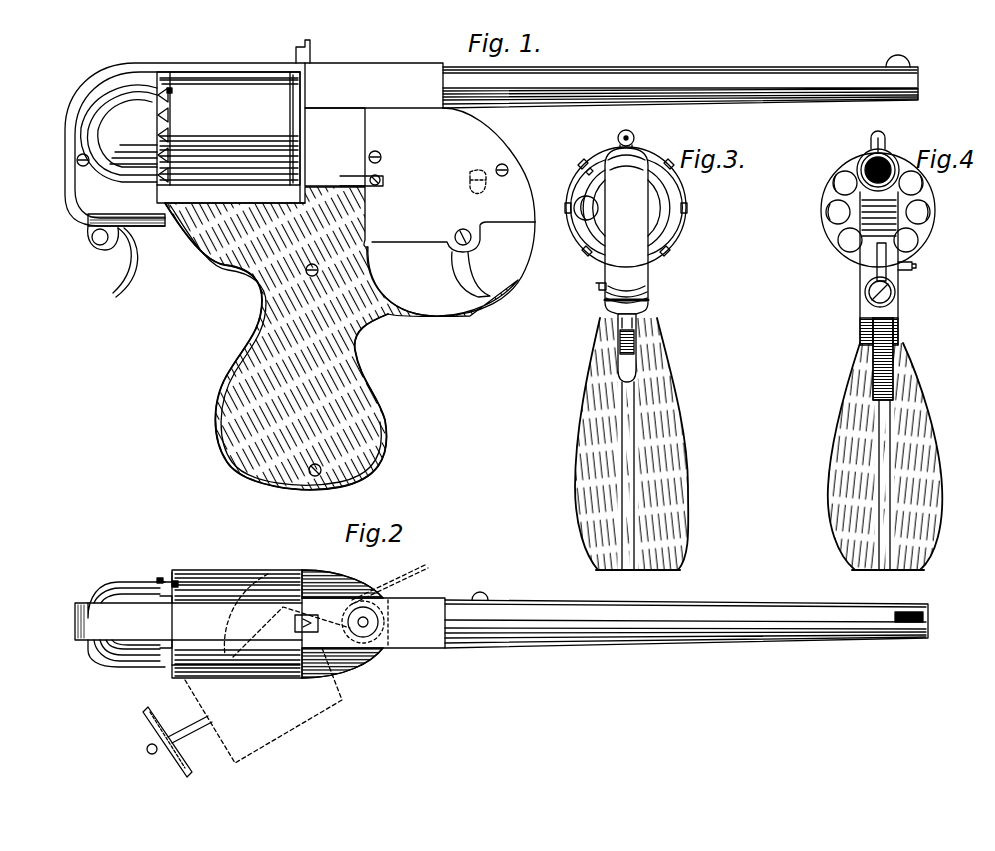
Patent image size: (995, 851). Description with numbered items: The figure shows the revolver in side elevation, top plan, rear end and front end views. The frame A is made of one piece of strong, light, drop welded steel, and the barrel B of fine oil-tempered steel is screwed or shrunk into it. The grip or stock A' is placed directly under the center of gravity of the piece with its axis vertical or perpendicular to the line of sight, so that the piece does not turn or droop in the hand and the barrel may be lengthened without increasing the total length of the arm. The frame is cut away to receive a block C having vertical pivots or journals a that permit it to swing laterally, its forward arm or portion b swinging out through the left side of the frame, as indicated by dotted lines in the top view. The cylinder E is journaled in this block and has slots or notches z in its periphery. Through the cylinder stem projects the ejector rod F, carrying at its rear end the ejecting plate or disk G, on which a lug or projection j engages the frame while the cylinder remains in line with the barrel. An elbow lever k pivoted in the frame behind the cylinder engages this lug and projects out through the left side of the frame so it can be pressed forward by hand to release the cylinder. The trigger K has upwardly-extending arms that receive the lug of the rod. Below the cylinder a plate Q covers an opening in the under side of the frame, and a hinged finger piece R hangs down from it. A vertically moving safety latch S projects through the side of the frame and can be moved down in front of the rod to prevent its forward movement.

In FIG. 1, the frame A is at (374, 85).
In FIG. 3, the frame A is at (626, 225).
In FIG. 4, the frame A is at (863, 296).
In FIG. 2, the frame A is at (260, 623).
In FIG. 1, the grip or stock A' is at (341, 338).
In FIG. 3, the grip or stock A' is at (631, 444).
In FIG. 4, the grip or stock A' is at (885, 456).
In FIG. 1, the barrel B is at (502, 87).
In FIG. 4, the barrel B is at (866, 156).
In FIG. 2, the barrel B is at (565, 636).
In FIG. 1, the block C is at (344, 147).
In FIG. 2, the block C is at (378, 590).
In FIG. 1, the cylinder E is at (231, 137).
In FIG. 3, the cylinder E is at (700, 239).
In FIG. 4, the cylinder E is at (824, 213).
In FIG. 2, the cylinder E is at (245, 560).
In FIG. 1, the trigger K is at (450, 268).
In FIG. 1, the elbow lever k is at (552, 228).
In FIG. 3, the elbow lever k is at (582, 218).
In FIG. 2, the elbow lever k is at (158, 576).
In FIG. 1, the plate Q is at (150, 228).
In FIG. 3, the plate Q is at (612, 310).
In FIG. 1, the hinged or pivoted finger piece R is at (113, 261).
In FIG. 3, the hinged or pivoted finger piece R is at (616, 354).
In FIG. 1, the safety latch S is at (468, 186).
In FIG. 3, the safety latch S is at (594, 285).
In FIG. 4, the safety latch S is at (918, 268).
In FIG. 2, the safety latch S is at (483, 585).
In FIG. 1, the slots or notches z is at (174, 92).
In FIG. 3, the slots or notches z is at (584, 172).
In FIG. 2, the slots or notches z is at (180, 584).
In FIG. 2, the vertical pivots or journals a is at (350, 622).
In FIG. 2, the forward arm or portion of the block b is at (408, 583).
In FIG. 2, the ejector rod F is at (190, 723).
In FIG. 2, the ejecting plate or disk G is at (151, 740).
In FIG. 2, the lug or projection j is at (144, 751).